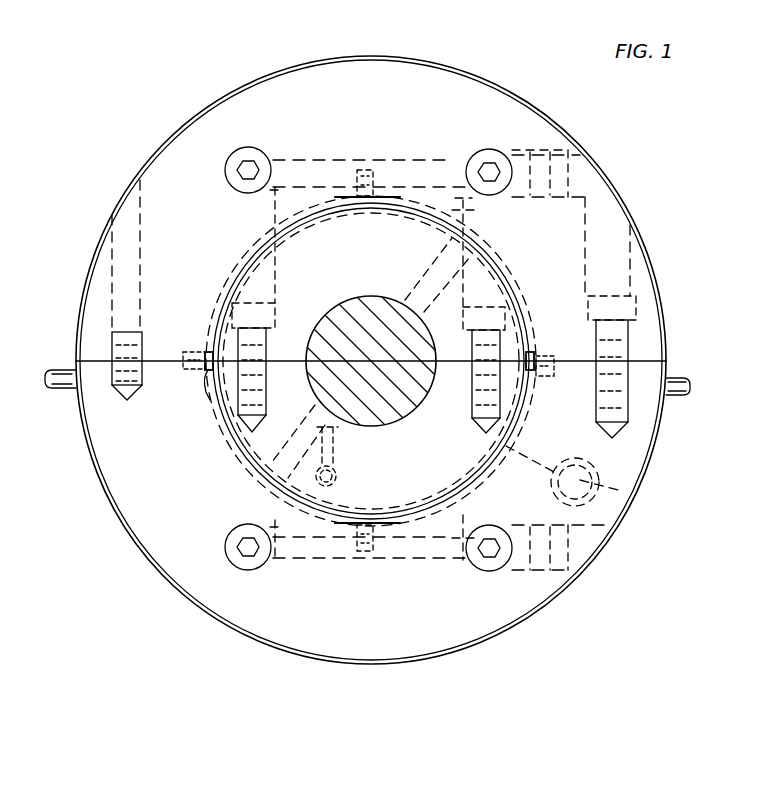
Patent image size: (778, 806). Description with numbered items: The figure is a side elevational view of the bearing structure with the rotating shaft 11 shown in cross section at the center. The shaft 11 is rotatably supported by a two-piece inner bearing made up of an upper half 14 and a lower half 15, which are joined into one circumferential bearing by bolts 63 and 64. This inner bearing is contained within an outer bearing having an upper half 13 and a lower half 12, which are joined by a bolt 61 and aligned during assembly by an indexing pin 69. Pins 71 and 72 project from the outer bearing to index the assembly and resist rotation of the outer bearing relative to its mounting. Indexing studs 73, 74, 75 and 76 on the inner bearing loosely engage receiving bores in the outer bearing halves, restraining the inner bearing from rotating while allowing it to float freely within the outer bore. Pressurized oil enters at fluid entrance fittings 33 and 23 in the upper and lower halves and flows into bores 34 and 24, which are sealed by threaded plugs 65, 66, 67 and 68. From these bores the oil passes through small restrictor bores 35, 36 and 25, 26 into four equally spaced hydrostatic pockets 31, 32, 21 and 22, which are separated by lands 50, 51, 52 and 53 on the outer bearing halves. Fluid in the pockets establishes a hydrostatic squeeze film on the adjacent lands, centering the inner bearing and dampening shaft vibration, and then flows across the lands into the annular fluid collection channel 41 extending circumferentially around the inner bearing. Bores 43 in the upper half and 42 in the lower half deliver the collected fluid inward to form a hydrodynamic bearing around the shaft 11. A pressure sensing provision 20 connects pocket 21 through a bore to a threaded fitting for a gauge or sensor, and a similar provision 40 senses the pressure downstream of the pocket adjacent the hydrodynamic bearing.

The rotating shaft 11 is at (404, 400).
The outer bearing lower half 12 is at (103, 470).
The outer bearing upper half 13 is at (178, 150).
The inner bearing upper half 14 is at (412, 495).
The inner bearing lower half 15 is at (401, 225).
The pressure sensing provision 20 is at (598, 486).
The pocket 21 is at (487, 480).
The pocket 22 is at (247, 470).
The fluid entrance fitting 23 is at (600, 545).
The bore 24 is at (388, 560).
The restrictor bore 25 is at (463, 565).
The restrictor bore 26 is at (273, 565).
The pocket 31 is at (492, 252).
The pocket 32 is at (236, 258).
The fluid entrance fitting 33 is at (578, 176).
The bore 34 is at (450, 162).
The restrictor bore 35 is at (470, 213).
The restrictor bore 36 is at (272, 206).
The pressure sensing provision 40 is at (340, 473).
The annular fluid collection channel 41 is at (216, 301).
The bore 42 is at (296, 440).
The bore 43 is at (437, 282).
The land 50 is at (208, 388).
The land 51 is at (392, 196).
The land 52 is at (533, 352).
The land 53 is at (356, 530).
The bolt 61 is at (640, 302).
The bolt 63 is at (510, 318).
The bolt 64 is at (284, 312).
The threaded plug 65 is at (494, 566).
The threaded plug 66 is at (225, 545).
The threaded plug 67 is at (262, 158).
The threaded plug 68 is at (498, 158).
The indexing pin 69 is at (118, 345).
The pin 71 is at (66, 385).
The pin 72 is at (676, 378).
The indexing stud 73 is at (366, 168).
The indexing stud 74 is at (546, 378).
The indexing stud 75 is at (365, 553).
The indexing stud 76 is at (186, 380).